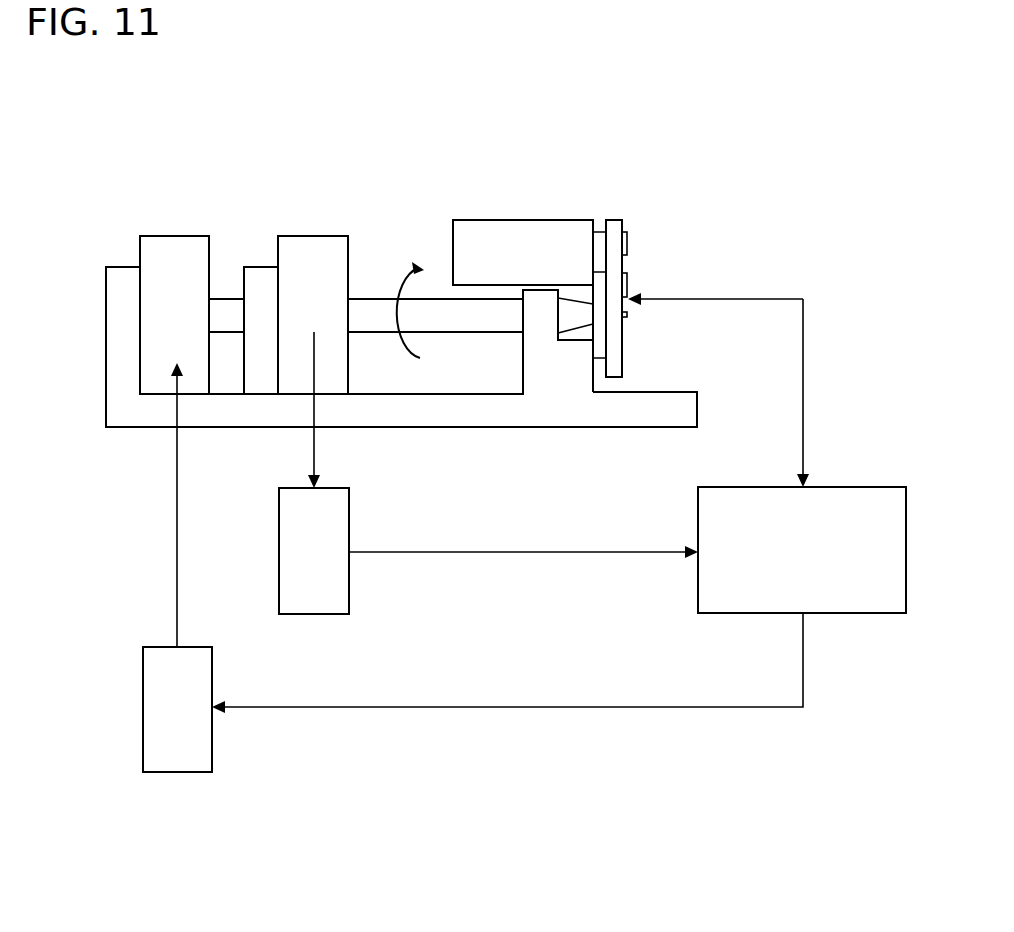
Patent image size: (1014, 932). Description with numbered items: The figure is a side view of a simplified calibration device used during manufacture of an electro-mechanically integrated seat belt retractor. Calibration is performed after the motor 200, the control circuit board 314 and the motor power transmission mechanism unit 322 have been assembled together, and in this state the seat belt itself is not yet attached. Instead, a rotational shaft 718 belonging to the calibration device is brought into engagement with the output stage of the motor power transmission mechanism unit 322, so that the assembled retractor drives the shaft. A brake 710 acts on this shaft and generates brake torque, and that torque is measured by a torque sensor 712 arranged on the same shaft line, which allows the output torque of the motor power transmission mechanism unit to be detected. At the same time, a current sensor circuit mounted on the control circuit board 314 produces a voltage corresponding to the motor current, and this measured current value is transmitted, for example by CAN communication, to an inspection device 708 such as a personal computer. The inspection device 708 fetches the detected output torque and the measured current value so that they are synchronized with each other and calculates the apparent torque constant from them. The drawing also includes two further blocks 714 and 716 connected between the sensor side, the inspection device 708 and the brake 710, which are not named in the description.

The motor 200 is at (547, 228).
The control circuit board 314 is at (623, 233).
The motor power transmission mechanism unit 322 is at (600, 302).
The inspection device 708 is at (866, 600).
The brake 710 is at (167, 248).
The torque sensor 712 is at (317, 242).
The position detector 714 is at (322, 582).
The motor driver 716 is at (165, 693).
The rotational shaft 718 is at (372, 315).